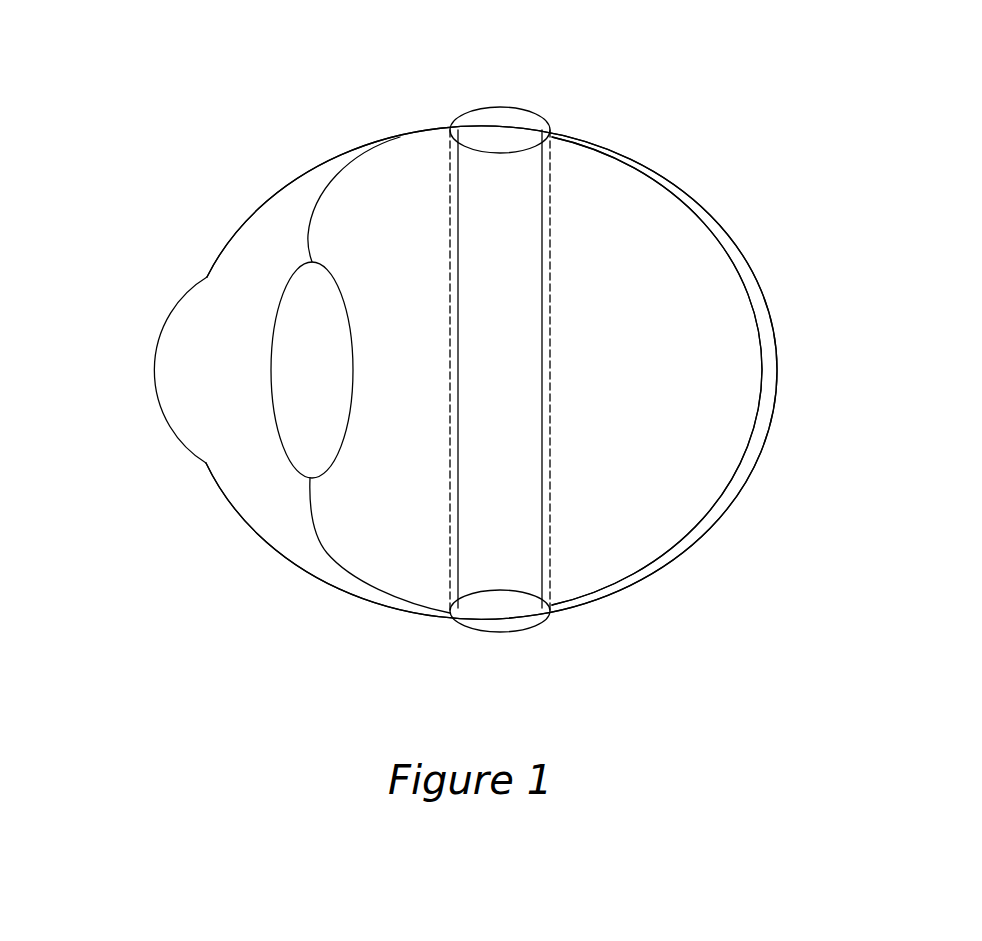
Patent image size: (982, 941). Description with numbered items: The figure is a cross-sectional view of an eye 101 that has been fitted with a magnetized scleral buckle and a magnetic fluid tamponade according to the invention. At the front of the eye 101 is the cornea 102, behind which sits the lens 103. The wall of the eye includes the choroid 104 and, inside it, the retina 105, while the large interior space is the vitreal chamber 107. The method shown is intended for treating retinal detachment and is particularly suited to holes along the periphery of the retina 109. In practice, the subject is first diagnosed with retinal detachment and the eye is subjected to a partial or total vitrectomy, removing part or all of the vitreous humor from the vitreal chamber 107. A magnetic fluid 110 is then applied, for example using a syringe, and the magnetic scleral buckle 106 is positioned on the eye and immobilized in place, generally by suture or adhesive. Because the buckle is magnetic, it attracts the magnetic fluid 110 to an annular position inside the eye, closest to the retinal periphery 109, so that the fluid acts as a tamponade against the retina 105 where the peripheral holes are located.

The eye 101 is at (630, 94).
The cornea 102 is at (155, 366).
The lens 103 is at (272, 420).
The choroid 104 is at (775, 341).
The retina 105 is at (725, 498).
The magnetic scleral buckle 106 is at (496, 631).
The vitreal chamber 107 is at (621, 238).
The retinal periphery 109 is at (545, 116).
The magnetic fluid 110 is at (489, 607).